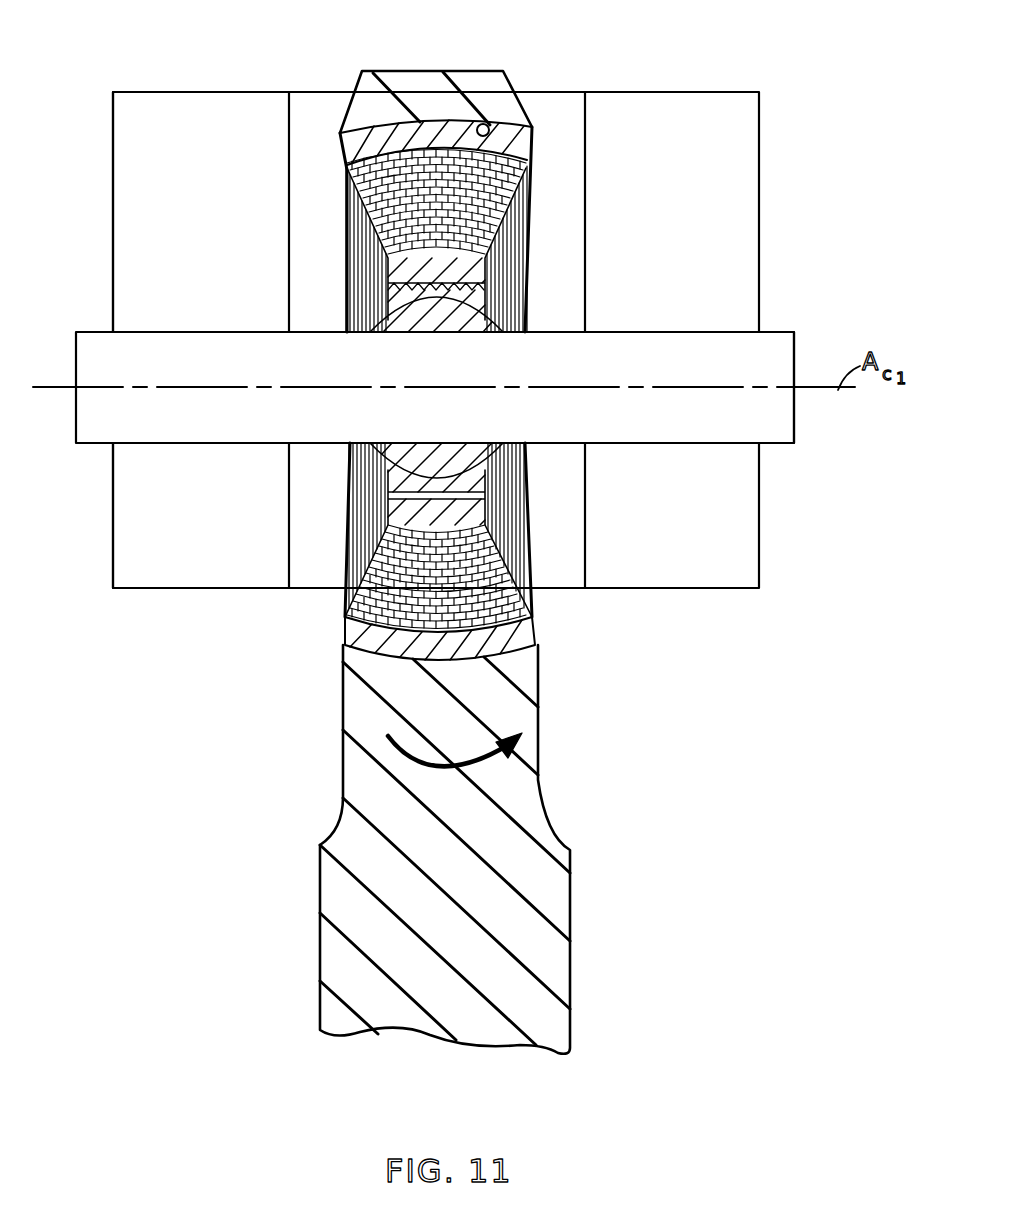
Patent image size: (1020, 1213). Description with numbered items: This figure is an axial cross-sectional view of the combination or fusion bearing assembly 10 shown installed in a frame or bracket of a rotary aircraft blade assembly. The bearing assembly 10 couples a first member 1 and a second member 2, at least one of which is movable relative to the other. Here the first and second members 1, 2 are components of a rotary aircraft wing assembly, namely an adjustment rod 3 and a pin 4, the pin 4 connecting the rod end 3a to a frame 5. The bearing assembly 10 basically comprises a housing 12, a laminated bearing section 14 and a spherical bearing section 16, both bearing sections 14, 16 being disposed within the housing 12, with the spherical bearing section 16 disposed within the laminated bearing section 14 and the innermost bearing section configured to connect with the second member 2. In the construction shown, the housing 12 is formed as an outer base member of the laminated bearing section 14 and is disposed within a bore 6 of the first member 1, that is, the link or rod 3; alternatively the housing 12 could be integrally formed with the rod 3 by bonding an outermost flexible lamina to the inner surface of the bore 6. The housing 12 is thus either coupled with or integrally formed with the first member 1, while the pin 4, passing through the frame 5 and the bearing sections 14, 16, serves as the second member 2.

The first member 1 is at (214, 913).
The second member 2 is at (781, 462).
The adjustment rod 3 is at (568, 894).
The rod end 3a is at (482, 78).
The pin 4 is at (690, 437).
The frame 5 is at (748, 208).
The bore 6 is at (490, 124).
The bearing assembly 10 is at (258, 203).
The housing 12 is at (524, 658).
The laminated bearing section 14 is at (548, 220).
The spherical bearing section 16 is at (342, 468).